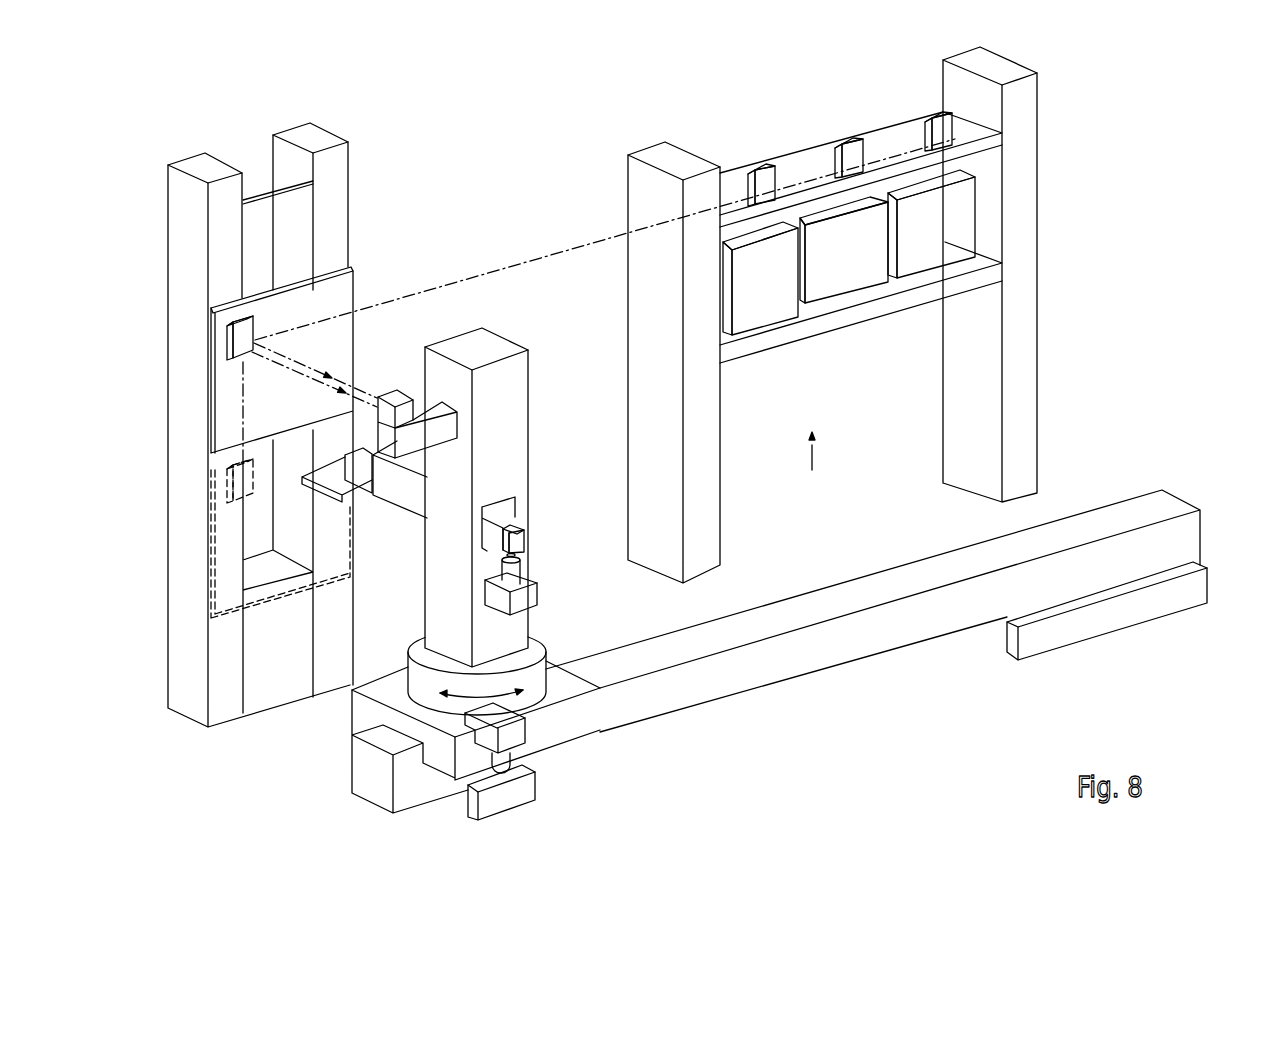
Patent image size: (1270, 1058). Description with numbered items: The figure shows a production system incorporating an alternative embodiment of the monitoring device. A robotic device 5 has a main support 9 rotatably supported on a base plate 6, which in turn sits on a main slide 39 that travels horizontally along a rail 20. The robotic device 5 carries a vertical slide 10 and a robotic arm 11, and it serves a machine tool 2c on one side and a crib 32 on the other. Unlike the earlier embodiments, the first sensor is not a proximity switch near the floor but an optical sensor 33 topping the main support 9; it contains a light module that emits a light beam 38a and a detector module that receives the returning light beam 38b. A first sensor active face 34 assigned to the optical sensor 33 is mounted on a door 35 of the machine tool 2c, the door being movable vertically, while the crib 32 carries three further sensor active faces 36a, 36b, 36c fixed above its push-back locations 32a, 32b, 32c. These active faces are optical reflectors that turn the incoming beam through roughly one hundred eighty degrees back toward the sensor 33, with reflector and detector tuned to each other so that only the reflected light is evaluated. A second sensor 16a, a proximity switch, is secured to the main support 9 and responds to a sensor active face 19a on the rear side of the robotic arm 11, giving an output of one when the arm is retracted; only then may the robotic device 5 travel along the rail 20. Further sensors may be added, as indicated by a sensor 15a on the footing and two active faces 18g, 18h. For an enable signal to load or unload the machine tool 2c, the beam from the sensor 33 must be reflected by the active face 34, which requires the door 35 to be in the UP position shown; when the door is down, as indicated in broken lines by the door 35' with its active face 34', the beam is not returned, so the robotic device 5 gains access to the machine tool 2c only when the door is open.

The machine tool 2c is at (372, 210).
The robotic device 5 is at (540, 335).
The base plate 6 is at (548, 650).
The main support 9 is at (502, 390).
The vertical slide 10 is at (405, 500).
The robotic arm 11 is at (365, 470).
The sensor 15a is at (503, 758).
The second sensor 16a is at (515, 568).
The active face 18g is at (465, 807).
The active face 18h is at (1012, 635).
The sensor active face 19a is at (517, 540).
The rail 20 is at (765, 690).
The crib 32 is at (637, 118).
The push-back location 32a is at (763, 362).
The push-back location 32b is at (848, 342).
The push-back location 32c is at (930, 315).
The optical sensor 33 is at (397, 390).
The first sensor active face 34 is at (235, 309).
The sensor active face 34' is at (195, 482).
The door 35 is at (238, 476).
The door 35' is at (239, 544).
The sensor active face 36a is at (767, 176).
The sensor active face 36b is at (853, 147).
The sensor active face 36c is at (940, 122).
The light beam 38a is at (318, 385).
The light beam 38b is at (318, 372).
The main slide 39 is at (573, 688).